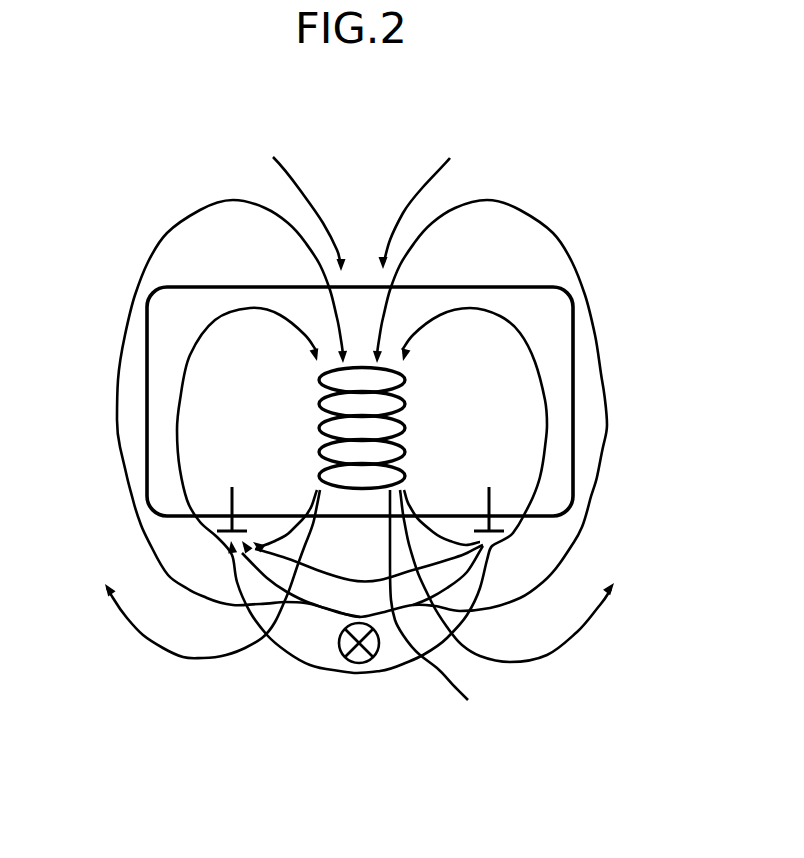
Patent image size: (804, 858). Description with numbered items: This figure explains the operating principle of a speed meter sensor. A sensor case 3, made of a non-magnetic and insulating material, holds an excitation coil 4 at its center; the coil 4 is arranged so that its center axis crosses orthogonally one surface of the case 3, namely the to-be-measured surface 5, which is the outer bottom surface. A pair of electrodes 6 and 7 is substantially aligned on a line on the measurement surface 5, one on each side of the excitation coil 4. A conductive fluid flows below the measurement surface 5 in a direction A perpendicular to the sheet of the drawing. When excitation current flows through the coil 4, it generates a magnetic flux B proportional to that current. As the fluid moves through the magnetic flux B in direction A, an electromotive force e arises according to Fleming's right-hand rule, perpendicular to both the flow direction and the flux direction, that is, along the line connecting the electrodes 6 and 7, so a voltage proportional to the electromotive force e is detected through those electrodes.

The sensor case 3 is at (147, 405).
The excitation coil 4 is at (318, 402).
The to-be-measured surface 5 is at (513, 517).
The electrode 6 is at (229, 492).
The electrode 7 is at (487, 492).
The magnetic flux B is at (420, 186).
The fluid flowing direction A is at (358, 658).
The electromotive force e is at (397, 670).